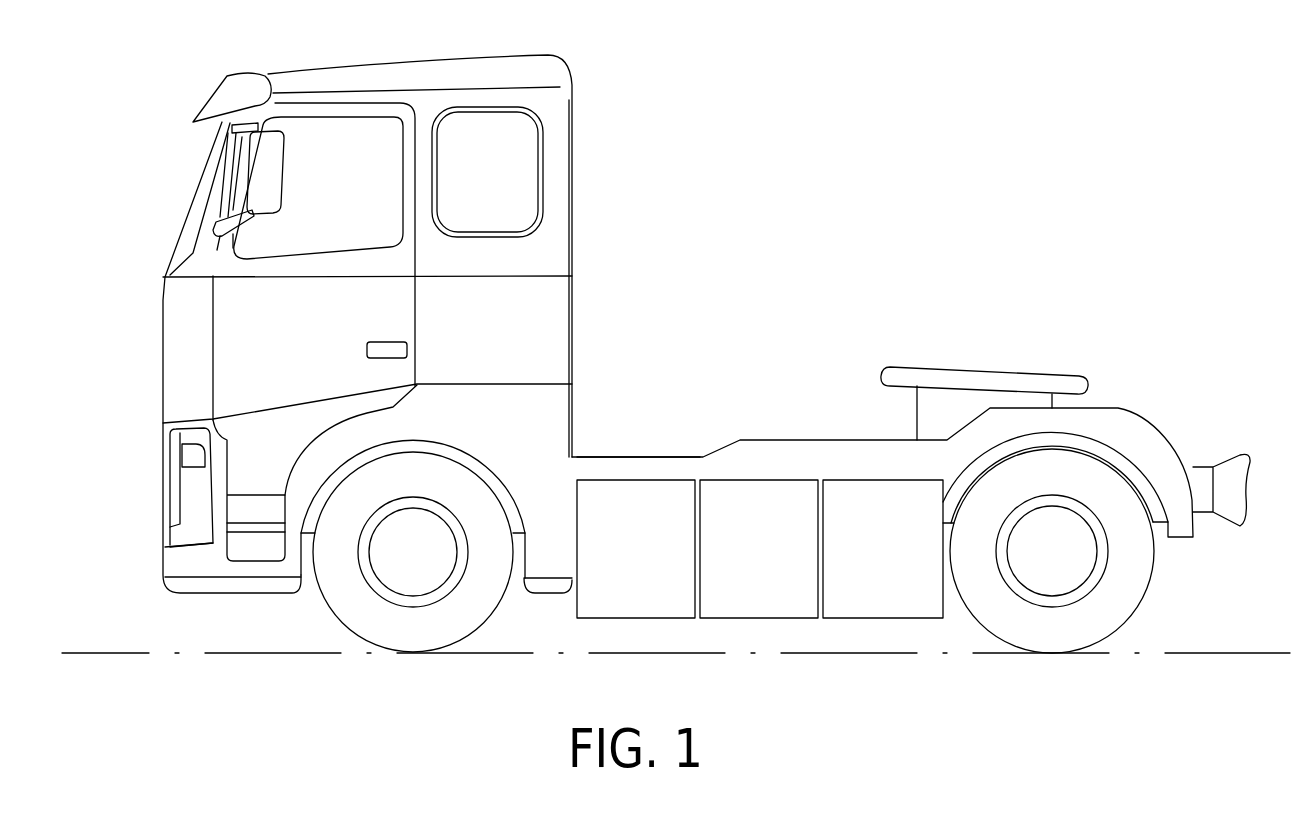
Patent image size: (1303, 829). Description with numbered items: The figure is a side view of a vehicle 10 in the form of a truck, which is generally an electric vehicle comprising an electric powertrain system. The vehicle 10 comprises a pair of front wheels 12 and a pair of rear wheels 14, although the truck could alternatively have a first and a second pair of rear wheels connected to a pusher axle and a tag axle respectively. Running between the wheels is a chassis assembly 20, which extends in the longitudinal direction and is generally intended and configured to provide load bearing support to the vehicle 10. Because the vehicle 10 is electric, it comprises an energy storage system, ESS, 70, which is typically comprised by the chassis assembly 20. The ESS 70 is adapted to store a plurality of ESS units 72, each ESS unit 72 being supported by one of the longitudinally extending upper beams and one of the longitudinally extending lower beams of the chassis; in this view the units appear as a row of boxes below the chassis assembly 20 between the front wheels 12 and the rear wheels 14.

The vehicle 10 is at (697, 188).
The front wheels 12 is at (415, 628).
The rear wheels 14 is at (1054, 624).
The chassis assembly 20 is at (647, 507).
The energy storage system (ESS) 70 is at (888, 564).
The ESS unit 72 is at (760, 549).